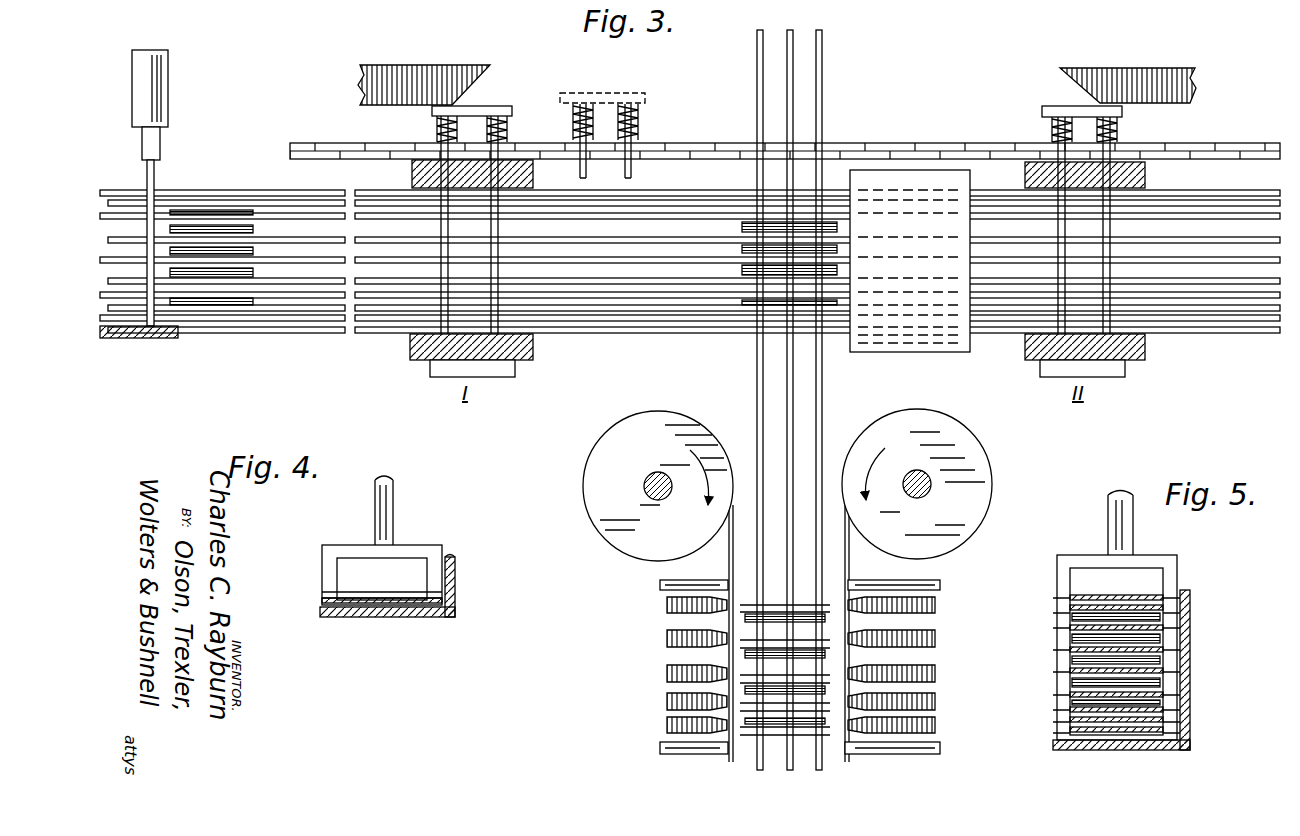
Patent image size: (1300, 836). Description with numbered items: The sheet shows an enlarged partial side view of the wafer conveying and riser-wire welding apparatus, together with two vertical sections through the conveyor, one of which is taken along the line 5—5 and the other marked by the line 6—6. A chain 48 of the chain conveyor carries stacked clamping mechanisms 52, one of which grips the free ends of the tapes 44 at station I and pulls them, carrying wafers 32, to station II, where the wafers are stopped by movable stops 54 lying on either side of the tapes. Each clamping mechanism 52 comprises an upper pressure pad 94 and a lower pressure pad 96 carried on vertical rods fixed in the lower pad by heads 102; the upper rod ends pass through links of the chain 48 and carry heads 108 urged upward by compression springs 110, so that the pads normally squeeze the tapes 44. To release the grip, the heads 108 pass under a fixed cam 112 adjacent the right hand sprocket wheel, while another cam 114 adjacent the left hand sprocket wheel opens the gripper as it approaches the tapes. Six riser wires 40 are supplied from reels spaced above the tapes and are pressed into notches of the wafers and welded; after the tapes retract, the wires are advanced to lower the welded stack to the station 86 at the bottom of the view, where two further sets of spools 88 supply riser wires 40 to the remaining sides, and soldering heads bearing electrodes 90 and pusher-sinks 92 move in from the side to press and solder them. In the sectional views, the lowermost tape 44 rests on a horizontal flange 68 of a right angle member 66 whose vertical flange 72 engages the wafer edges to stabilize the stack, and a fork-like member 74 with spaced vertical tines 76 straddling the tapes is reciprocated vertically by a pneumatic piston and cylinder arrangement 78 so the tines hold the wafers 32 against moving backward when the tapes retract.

In FIG. 3, the section line 5— 5 is at (121, 178).
In FIG. 3, the section line 6— 6 is at (350, 66).
In FIG. 3, the wafer 32 is at (207, 200).
In FIG. 4, the wafer 32 is at (368, 598).
In FIG. 5, the wafer 32 is at (1088, 742).
In FIG. 3, the riser wires 40 is at (823, 82).
In FIG. 3, the tapes 44 is at (665, 190).
In FIG. 4, the tapes 44 is at (348, 608).
In FIG. 5, the tapes 44 is at (1130, 745).
In FIG. 3, the chain 48 is at (693, 143).
In FIG. 3, the clamping mechanism 52 is at (405, 362).
In FIG. 3, the movable stops 54 is at (905, 170).
In FIG. 4, the right angle member 66 is at (452, 620).
In FIG. 5, the right angle member 66 is at (1055, 750).
In FIG. 4, the horizontal flange 68 is at (378, 618).
In FIG. 5, the horizontal flange 68 is at (1160, 748).
In FIG. 4, the vertical flange 72 is at (458, 570).
In FIG. 5, the vertical flange 72 is at (1190, 598).
In FIG. 4, the fork-like member 74 is at (400, 548).
In FIG. 5, the fork-like member 74 is at (1080, 560).
In FIG. 4, the vertical tines 76 is at (325, 568).
In FIG. 5, the vertical tines 76 is at (1060, 642).
In FIG. 3, the pneumatic piston and cylinder arrangement 78 is at (148, 58).
In FIG. 3, the station 86 is at (665, 752).
In FIG. 3, the spools 88 is at (612, 445).
In FIG. 3, the electrodes 90 is at (668, 582).
In FIG. 3, the pusher-sinks 92 is at (672, 608).
In FIG. 3, the upper pressure pad 94 is at (412, 174).
In FIG. 3, the lower pressure pad 96 is at (410, 350).
In FIG. 3, the heads 102 is at (510, 370).
In FIG. 3, the heads 108 is at (488, 108).
In FIG. 3, the compression springs 110 is at (437, 126).
In FIG. 3, the fixed cams 112 is at (1160, 95).
In FIG. 3, the cam 114 is at (403, 75).